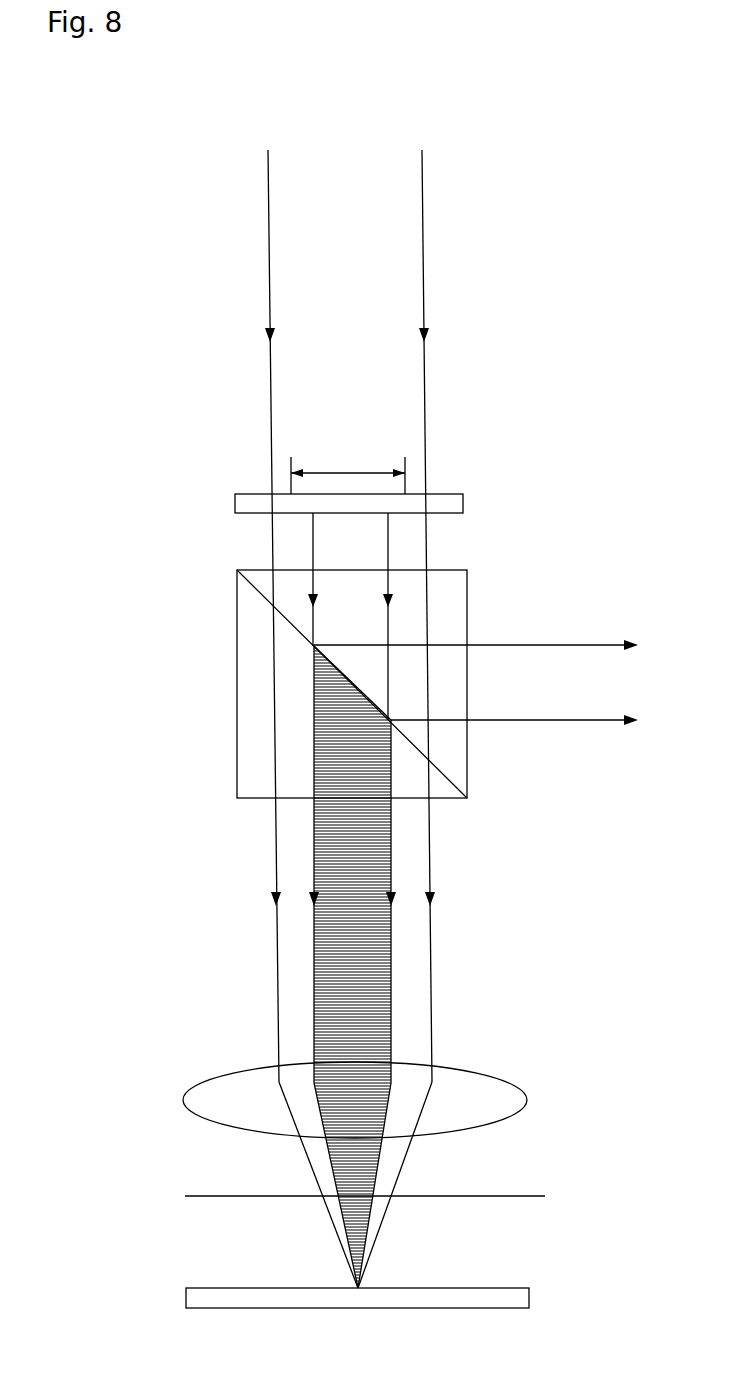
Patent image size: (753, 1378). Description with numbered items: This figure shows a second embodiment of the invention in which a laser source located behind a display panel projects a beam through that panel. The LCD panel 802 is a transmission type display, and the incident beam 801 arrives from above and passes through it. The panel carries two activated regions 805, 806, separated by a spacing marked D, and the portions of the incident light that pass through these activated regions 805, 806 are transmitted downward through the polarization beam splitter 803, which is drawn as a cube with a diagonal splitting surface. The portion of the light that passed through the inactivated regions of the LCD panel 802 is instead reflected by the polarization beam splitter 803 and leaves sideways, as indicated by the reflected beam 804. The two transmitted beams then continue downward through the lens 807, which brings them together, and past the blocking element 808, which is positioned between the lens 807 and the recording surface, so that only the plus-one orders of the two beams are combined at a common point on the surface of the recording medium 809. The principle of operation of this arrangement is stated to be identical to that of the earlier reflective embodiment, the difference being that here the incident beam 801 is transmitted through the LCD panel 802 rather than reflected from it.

The incident beam 801 is at (340, 158).
The beam spacing / aperture width D is at (318, 467).
The LCD panel 802 is at (466, 498).
The polarization beam splitter 803 is at (238, 703).
The beam 804 is at (602, 650).
The activated region 805 is at (282, 517).
The activated region 806 is at (418, 516).
The lens 807 is at (530, 1087).
The blocking element 808 is at (545, 1193).
The recording medium 809 is at (537, 1297).